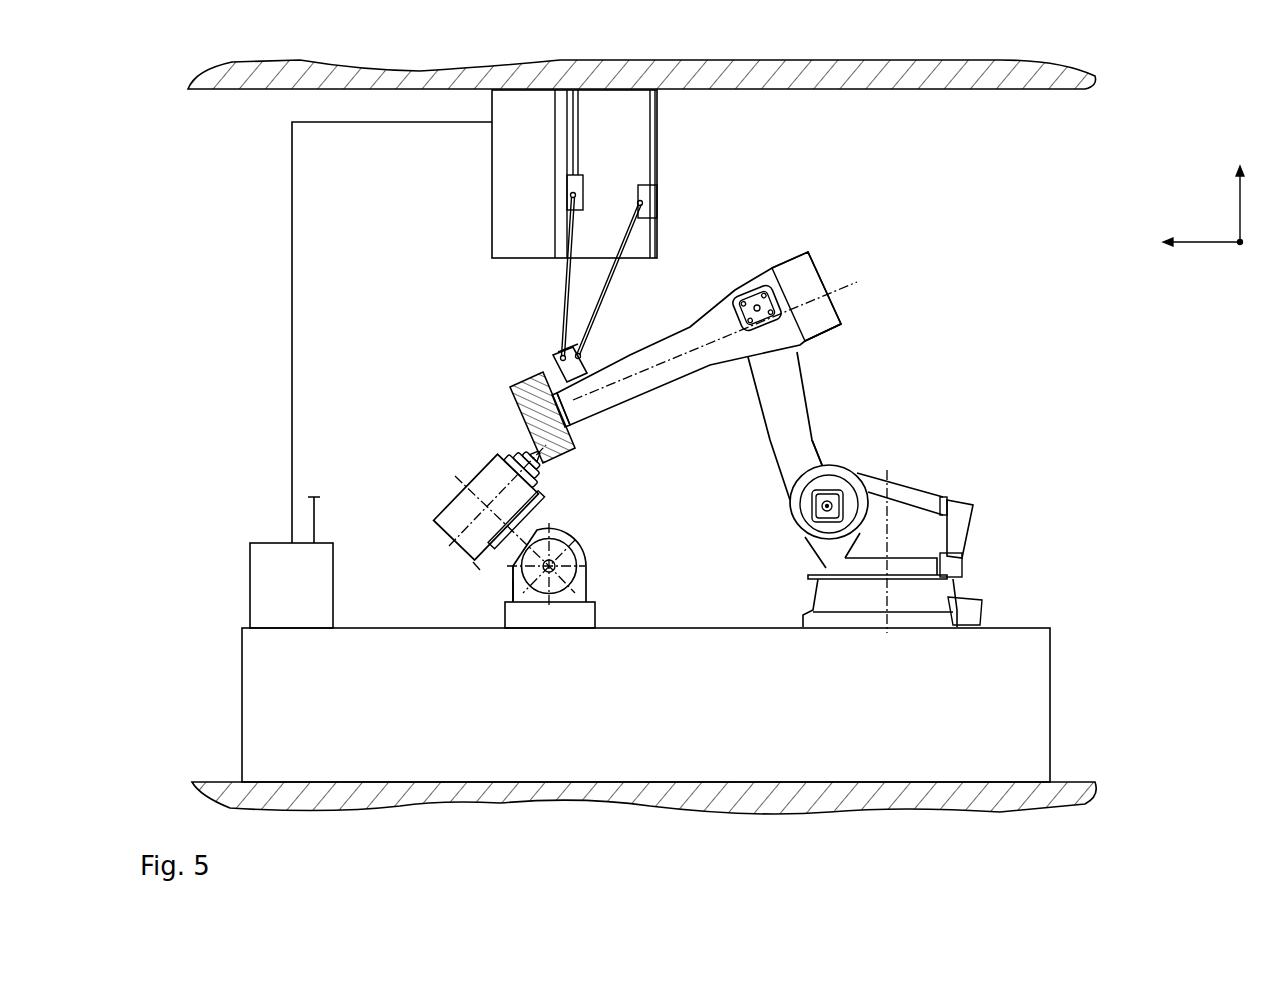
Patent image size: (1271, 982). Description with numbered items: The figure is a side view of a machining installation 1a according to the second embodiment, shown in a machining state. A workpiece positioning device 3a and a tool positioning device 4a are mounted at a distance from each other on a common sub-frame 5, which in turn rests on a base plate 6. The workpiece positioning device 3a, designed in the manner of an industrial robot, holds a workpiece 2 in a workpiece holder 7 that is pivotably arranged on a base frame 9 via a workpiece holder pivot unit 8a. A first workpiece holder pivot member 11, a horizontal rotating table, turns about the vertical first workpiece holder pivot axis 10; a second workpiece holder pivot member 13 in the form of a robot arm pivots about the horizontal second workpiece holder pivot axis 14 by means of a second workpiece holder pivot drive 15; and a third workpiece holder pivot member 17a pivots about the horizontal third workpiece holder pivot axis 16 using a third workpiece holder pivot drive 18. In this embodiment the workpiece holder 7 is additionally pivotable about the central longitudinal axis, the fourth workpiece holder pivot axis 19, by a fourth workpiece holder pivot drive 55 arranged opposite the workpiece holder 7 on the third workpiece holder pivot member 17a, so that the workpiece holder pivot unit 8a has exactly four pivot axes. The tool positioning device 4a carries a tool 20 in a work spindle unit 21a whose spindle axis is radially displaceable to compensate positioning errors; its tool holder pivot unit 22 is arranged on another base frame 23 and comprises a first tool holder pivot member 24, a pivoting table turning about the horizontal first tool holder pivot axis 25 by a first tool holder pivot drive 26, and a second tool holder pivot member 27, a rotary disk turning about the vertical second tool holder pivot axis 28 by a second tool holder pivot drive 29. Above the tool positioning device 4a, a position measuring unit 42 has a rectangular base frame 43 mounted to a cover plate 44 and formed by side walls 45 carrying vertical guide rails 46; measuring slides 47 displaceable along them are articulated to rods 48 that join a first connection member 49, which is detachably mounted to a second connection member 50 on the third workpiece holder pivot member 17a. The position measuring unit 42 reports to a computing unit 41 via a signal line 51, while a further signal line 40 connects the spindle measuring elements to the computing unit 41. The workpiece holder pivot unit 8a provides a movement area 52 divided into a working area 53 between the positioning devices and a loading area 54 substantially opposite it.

The machining installation 1a is at (1003, 262).
The workpiece 2 is at (512, 388).
The workpiece positioning device 3a is at (938, 494).
The tool positioning device 4a is at (442, 495).
The sub-frame 5 is at (258, 698).
The base plate 6 is at (193, 788).
The workpiece holder 7 is at (576, 449).
The workpiece holder pivot unit 8a is at (810, 390).
The base frame 9 is at (940, 596).
The first workpiece holder pivot axis 10 is at (888, 480).
The first workpiece holder pivot member 11 is at (945, 540).
The second workpiece holder pivot member 13 is at (779, 430).
The second workpiece holder pivot axis 14 is at (822, 507).
The second workpiece holder pivot drive 15 is at (845, 470).
The third workpiece holder pivot axis 16 is at (763, 291).
The third workpiece holder pivot member 17a is at (673, 393).
The third workpiece holder pivot drive 18 is at (740, 305).
The fourth workpiece holder pivot axis 19 is at (832, 300).
The tool 20 is at (532, 445).
The work spindle unit 21a is at (465, 512).
The tool holder pivot unit 22 is at (587, 548).
The base frame 23 is at (507, 617).
The first tool holder pivot member 24 is at (512, 592).
The first tool holder pivot axis 25 is at (578, 573).
The first tool holder pivot drive 26 is at (565, 597).
The second tool holder pivot member 27 is at (462, 545).
The second tool holder pivot axis 28 is at (460, 490).
The second tool holder pivot drive 29 is at (512, 566).
The signal line 40 is at (314, 517).
The computing unit 41 is at (259, 575).
The position measuring unit 42 is at (489, 219).
The base frame 43 is at (517, 163).
The cover plate 44 is at (232, 64).
The side wall 45 is at (497, 244).
The guide rail 46 is at (573, 168).
The measuring slide 47 is at (568, 187).
The rod 48 is at (583, 322).
The first connection member 49 is at (566, 345).
The second connection member 50 is at (556, 362).
The signal line 51 is at (292, 389).
The movement area 52 is at (904, 292).
The working area 53 is at (673, 503).
The loading area 54 is at (1111, 372).
The fourth workpiece holder pivot drive 55 is at (838, 322).